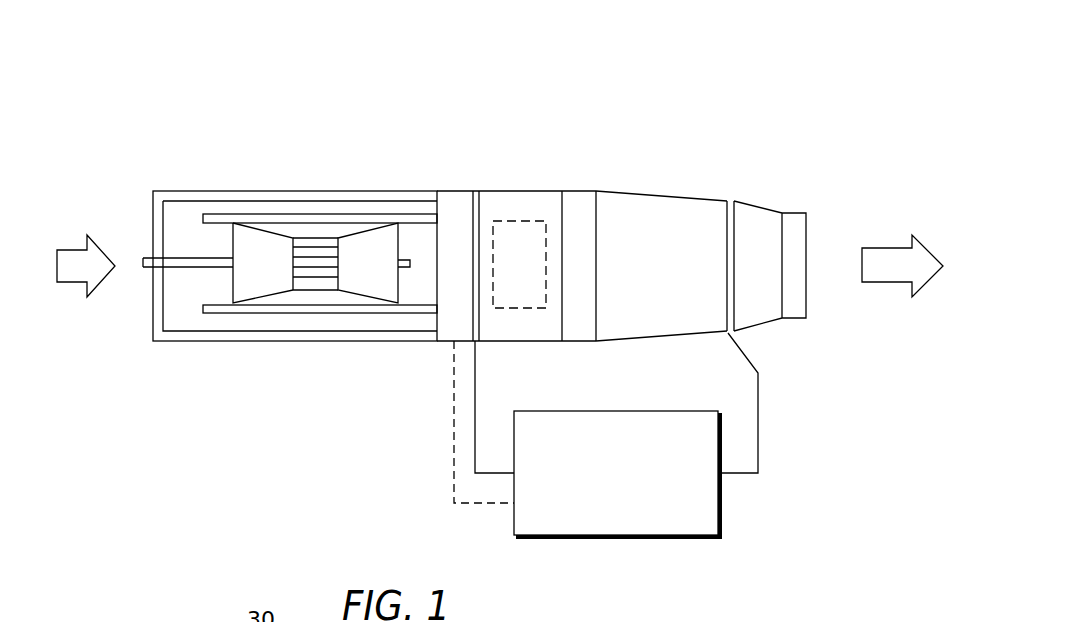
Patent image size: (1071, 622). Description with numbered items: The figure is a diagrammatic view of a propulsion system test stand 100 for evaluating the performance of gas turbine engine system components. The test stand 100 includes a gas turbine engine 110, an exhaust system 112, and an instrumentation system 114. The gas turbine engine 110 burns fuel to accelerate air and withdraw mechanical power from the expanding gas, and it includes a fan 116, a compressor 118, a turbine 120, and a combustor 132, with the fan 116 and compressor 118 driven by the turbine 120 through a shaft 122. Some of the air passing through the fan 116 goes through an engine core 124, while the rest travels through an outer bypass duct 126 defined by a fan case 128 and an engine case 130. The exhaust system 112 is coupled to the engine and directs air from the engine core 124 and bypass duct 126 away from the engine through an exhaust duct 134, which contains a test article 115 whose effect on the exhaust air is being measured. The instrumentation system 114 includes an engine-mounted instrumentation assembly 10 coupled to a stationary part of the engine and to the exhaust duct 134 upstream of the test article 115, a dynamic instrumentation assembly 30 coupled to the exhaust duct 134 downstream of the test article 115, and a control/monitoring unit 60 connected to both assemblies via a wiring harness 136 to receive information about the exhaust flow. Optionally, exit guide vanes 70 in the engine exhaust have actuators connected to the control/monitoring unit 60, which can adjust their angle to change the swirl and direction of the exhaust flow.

The propulsion system test stand 100 is at (843, 103).
The engine-mounted instrumentation assembly 10 is at (470, 339).
The gas turbine engine 110 is at (190, 347).
The fan 116 is at (158, 301).
The fan case 128 is at (260, 192).
The outer bypass duct 126 is at (197, 205).
The engine case 130 is at (258, 313).
The shaft 122 is at (139, 256).
The compressor 118 is at (247, 244).
The engine core 124 is at (222, 282).
The combustor 132 is at (315, 247).
The turbine 120 is at (368, 255).
The exit guide vanes 70 is at (455, 238).
The exhaust system 112 is at (635, 188).
The exhaust duct 134 is at (612, 189).
The test article 115 is at (512, 266).
The dynamic instrumentation assembly 30 is at (728, 303).
The instrumentation system 114 is at (722, 337).
The wiring harness 136 is at (474, 437).
The control/monitoring unit 60 is at (732, 507).